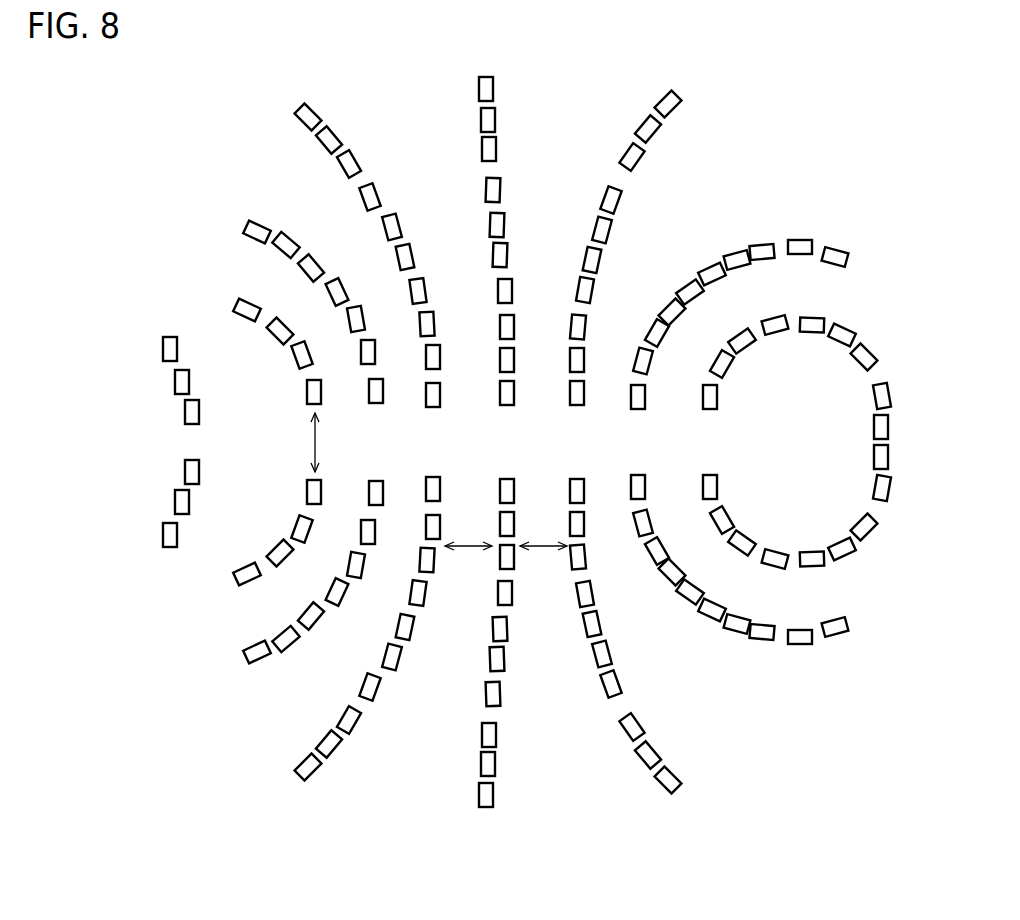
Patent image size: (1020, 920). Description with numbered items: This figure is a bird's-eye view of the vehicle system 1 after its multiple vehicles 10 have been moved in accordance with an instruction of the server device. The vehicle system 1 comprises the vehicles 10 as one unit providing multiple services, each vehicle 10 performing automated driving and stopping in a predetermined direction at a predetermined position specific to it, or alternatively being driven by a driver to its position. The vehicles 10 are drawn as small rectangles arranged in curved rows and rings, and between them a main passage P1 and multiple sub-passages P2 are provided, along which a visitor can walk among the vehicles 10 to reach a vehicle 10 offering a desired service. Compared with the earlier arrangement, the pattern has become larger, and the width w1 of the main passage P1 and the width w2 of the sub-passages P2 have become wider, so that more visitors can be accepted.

The vehicle system 1 is at (121, 72).
The vehicle 10 is at (833, 249).
The main passage P1 is at (714, 442).
The sub-passage P2 is at (257, 615).
The width of the main passage w1 is at (333, 442).
The width of the sub-passages w2 is at (506, 563).